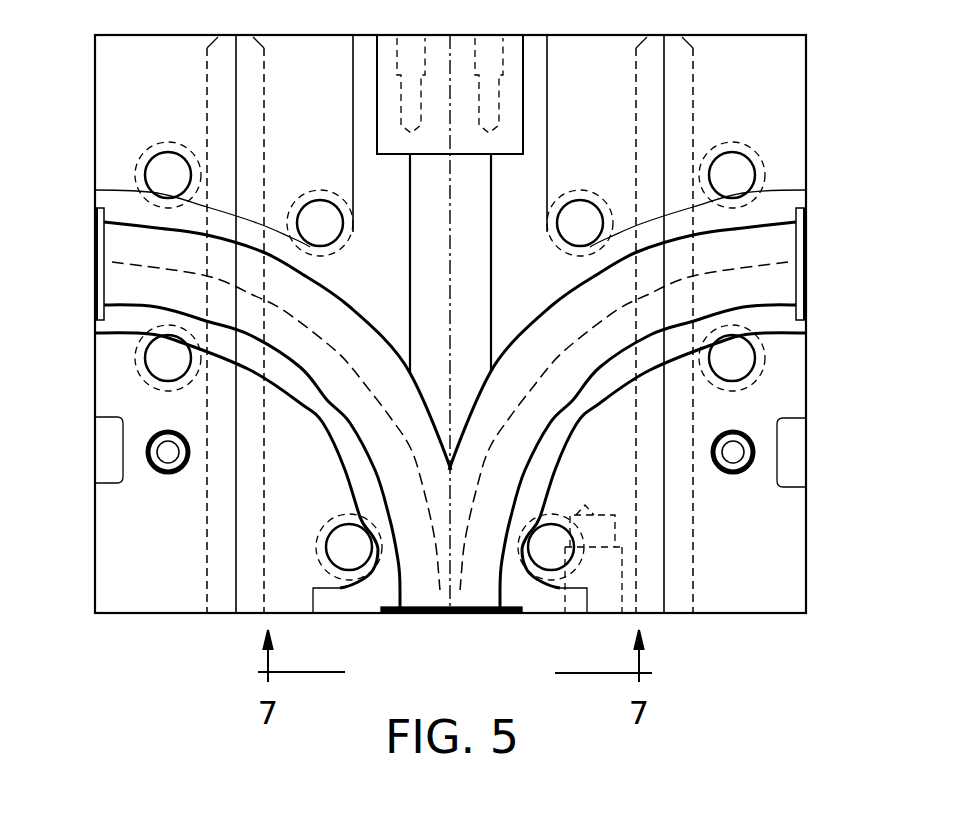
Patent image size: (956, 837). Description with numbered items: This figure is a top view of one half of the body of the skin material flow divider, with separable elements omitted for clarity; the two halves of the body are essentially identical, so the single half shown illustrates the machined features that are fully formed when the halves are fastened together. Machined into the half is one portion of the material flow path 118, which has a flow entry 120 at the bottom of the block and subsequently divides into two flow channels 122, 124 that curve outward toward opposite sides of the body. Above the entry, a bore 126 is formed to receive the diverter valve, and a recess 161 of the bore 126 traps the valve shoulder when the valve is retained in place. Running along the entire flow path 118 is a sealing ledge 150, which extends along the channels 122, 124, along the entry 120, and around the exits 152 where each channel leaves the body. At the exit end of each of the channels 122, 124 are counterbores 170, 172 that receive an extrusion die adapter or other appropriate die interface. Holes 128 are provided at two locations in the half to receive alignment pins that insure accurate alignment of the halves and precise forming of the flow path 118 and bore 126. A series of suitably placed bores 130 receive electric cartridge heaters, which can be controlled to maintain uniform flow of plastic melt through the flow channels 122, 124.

The material flow path 118 is at (330, 304).
The flow entry 120 is at (416, 590).
The flow channel 122 is at (367, 430).
The flow channel 124 is at (593, 307).
The bore 126 is at (440, 253).
The holes 128 is at (172, 475).
The bores 130 is at (205, 600).
The sealing ledge 150 is at (368, 60).
The exits 152 is at (128, 249).
The recess 161 is at (518, 55).
The counterbore 170 is at (95, 213).
The counterbore 172 is at (805, 310).